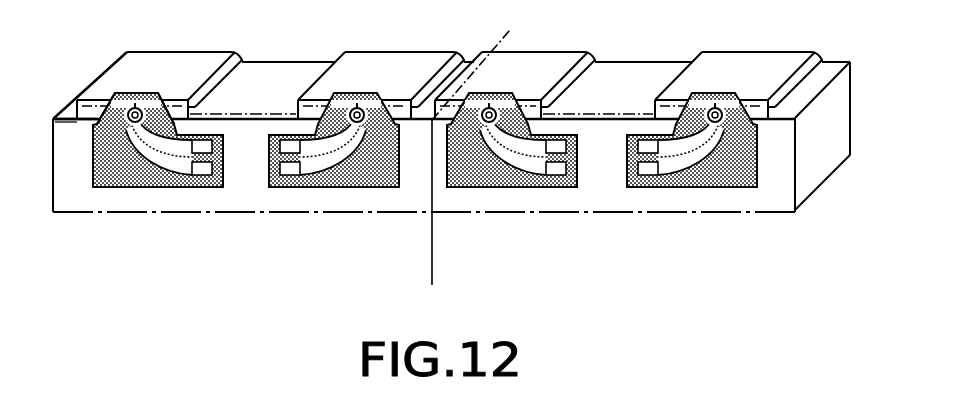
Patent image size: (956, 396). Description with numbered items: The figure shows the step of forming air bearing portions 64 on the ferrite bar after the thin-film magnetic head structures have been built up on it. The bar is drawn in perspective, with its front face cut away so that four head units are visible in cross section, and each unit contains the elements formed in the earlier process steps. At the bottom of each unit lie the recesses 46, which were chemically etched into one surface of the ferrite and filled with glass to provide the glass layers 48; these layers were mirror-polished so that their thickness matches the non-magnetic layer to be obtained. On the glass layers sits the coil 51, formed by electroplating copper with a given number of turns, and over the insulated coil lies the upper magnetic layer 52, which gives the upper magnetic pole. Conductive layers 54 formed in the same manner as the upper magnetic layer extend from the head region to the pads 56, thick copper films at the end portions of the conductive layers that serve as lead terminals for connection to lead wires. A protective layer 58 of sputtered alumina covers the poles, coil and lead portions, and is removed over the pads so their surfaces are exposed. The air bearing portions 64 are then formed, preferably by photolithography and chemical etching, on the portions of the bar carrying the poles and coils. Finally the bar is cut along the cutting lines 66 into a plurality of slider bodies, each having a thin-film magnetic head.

The recesses 46 is at (104, 189).
The glass layers 48 is at (100, 121).
The coil 51 is at (117, 108).
The upper magnetic layer 52 is at (147, 93).
The conductive layers 54 is at (175, 120).
The pads 56 is at (206, 189).
The protective layer 58 is at (796, 222).
The air bearing portions 64 is at (212, 62).
The cutting lines 66 is at (435, 271).